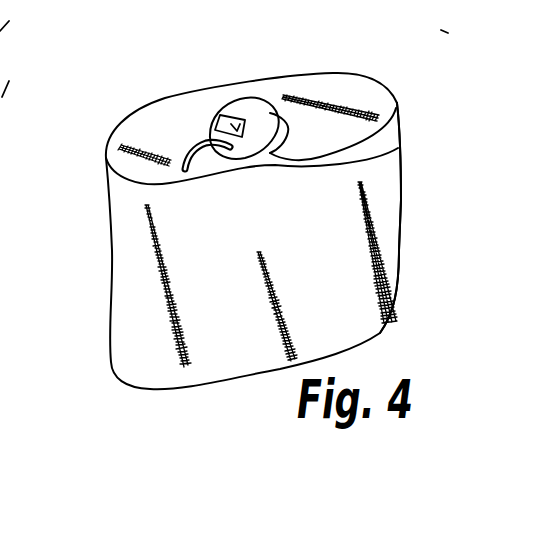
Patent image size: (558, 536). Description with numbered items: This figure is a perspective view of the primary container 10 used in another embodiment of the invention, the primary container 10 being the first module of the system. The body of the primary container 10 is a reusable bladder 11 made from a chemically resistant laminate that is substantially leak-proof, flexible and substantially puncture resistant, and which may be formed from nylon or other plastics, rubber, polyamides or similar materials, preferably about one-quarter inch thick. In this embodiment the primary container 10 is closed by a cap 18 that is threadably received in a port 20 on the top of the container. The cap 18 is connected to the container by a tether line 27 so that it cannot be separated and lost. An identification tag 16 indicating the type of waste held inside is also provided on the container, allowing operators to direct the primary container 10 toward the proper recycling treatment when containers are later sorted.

The primary container 10 is at (94, 332).
The reusable bladder 11 is at (392, 269).
The identification tag 16 is at (220, 116).
The cap 18 is at (222, 118).
The port 20 is at (255, 162).
The tether line 27 is at (190, 145).